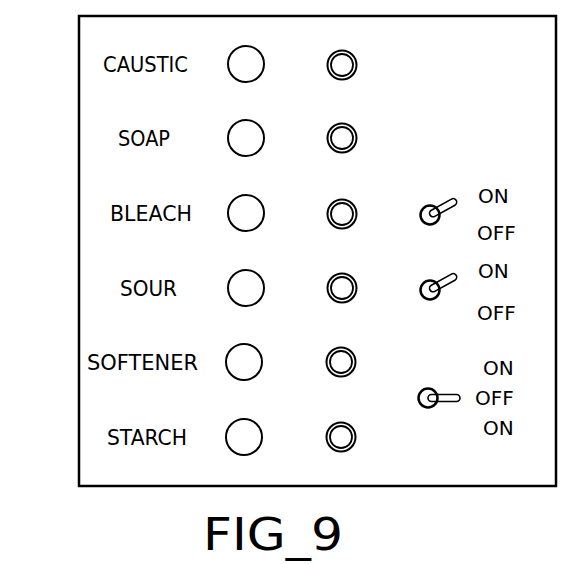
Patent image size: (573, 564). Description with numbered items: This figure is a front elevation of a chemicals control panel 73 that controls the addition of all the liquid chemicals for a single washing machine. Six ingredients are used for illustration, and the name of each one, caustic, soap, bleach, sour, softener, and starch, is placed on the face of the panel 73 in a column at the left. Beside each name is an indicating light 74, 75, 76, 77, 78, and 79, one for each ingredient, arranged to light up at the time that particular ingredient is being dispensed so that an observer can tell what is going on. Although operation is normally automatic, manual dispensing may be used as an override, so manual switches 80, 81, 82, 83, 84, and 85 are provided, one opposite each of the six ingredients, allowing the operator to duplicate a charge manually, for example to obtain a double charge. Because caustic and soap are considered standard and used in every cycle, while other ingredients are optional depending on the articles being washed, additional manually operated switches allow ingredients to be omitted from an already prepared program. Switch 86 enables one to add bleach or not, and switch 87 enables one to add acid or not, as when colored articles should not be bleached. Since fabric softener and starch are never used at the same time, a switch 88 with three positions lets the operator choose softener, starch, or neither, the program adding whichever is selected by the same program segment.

The chemicals control panel 73 is at (90, 143).
The indicating light 74 is at (255, 58).
The indicating light 75 is at (255, 132).
The indicating light 76 is at (254, 208).
The indicating light 77 is at (254, 283).
The indicating light 78 is at (252, 357).
The indicating light 79 is at (252, 431).
The manual switch 80 is at (352, 58).
The manual switch 81 is at (352, 131).
The manual switch 82 is at (352, 207).
The manual switch 83 is at (352, 281).
The manual switch 84 is at (351, 355).
The manual switch 85 is at (351, 430).
The switch 86 is at (450, 197).
The switch 87 is at (449, 277).
The three-position switch 88 is at (448, 393).